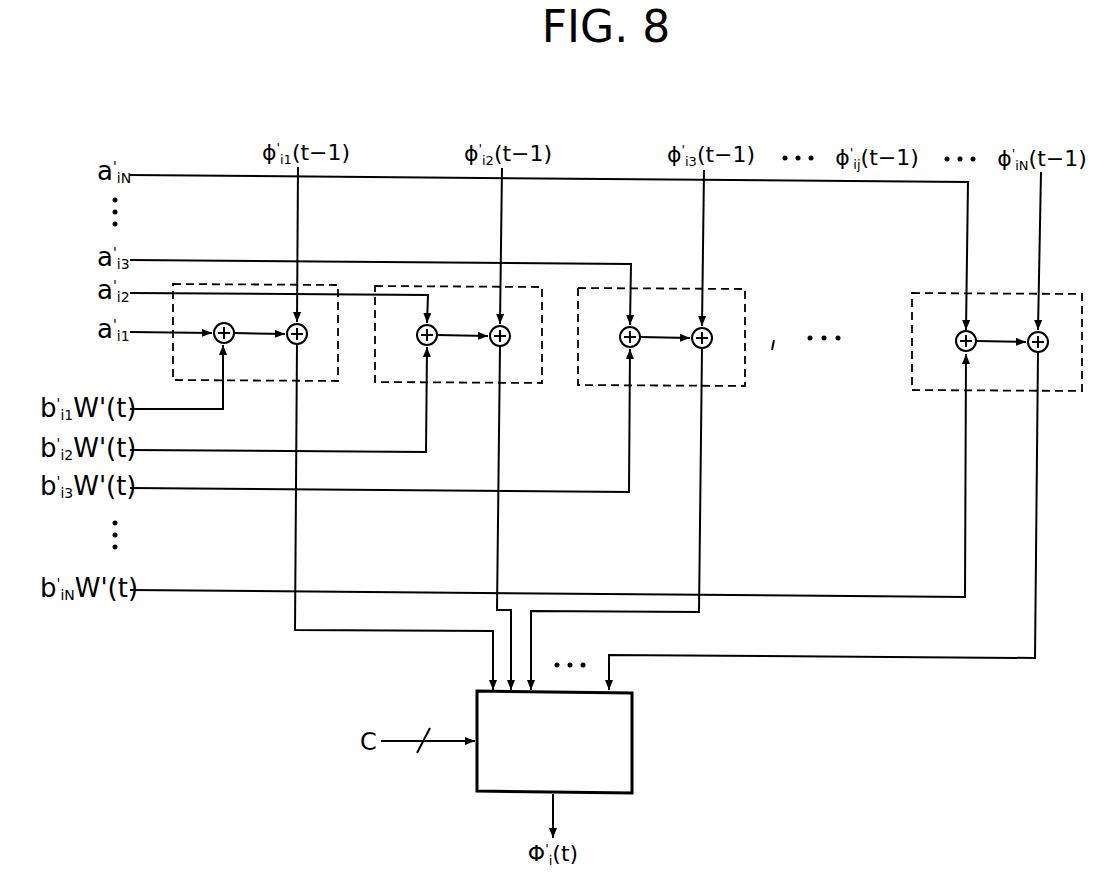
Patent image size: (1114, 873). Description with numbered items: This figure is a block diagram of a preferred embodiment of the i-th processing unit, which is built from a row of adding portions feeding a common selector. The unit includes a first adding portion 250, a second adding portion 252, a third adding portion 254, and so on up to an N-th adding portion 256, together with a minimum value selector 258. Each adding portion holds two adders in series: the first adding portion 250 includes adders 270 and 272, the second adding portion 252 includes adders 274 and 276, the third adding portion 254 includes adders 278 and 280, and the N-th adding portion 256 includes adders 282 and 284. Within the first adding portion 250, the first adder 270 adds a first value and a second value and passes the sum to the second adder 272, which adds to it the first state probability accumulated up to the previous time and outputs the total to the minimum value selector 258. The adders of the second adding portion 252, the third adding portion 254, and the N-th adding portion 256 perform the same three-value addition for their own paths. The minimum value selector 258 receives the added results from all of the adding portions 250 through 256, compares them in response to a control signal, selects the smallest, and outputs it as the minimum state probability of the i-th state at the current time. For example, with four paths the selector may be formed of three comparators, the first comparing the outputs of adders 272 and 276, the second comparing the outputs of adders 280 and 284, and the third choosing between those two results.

The first adding portion 250 is at (253, 283).
The second adding portion 252 is at (455, 287).
The third adding portion 254 is at (657, 290).
The N-th adding portion 256 is at (1018, 293).
The minimum value selector 258 is at (633, 742).
The first adder 270 is at (229, 344).
The second adder 272 is at (302, 345).
The adder 274 is at (432, 346).
The fourth adder 276 is at (505, 347).
The adder 278 is at (635, 348).
The sixth adder 280 is at (707, 349).
The adder 282 is at (971, 352).
The eighth adder 284 is at (1043, 353).